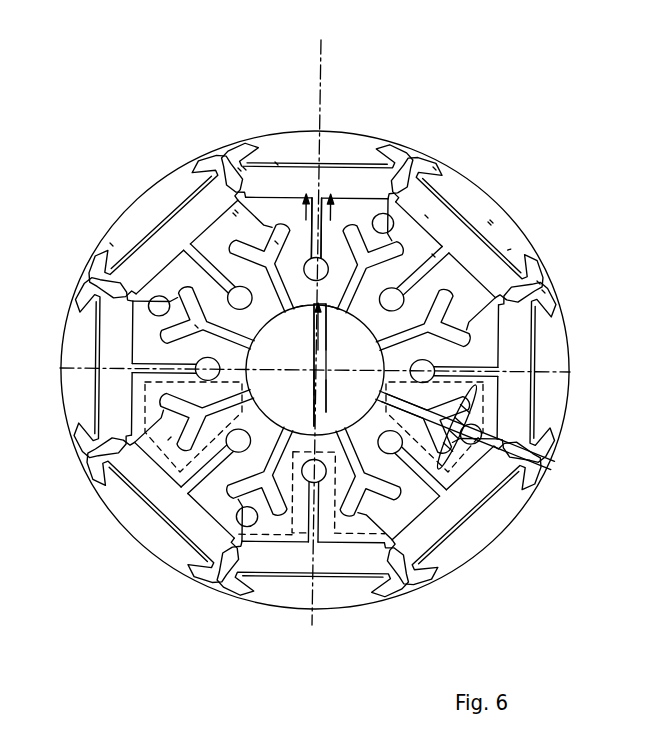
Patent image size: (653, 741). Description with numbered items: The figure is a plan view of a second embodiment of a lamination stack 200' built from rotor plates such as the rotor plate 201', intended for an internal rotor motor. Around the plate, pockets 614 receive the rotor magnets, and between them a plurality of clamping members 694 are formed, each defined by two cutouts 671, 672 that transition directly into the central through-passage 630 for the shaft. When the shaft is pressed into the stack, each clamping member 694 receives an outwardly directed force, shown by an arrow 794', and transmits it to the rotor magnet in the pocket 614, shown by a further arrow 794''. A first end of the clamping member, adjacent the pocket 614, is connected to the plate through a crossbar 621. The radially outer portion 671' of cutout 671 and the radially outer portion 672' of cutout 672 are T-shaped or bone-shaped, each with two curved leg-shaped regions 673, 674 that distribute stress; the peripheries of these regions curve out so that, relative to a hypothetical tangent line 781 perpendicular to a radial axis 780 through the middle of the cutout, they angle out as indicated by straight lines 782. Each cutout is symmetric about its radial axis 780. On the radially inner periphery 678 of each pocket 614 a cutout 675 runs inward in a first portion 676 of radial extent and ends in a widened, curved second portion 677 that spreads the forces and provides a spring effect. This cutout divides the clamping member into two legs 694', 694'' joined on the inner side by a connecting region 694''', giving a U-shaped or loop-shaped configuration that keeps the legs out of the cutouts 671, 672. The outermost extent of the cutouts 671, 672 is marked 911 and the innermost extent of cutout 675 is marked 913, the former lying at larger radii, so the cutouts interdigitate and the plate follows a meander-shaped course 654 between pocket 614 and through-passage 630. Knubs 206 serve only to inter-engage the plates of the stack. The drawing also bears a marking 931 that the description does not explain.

The lamination stack 200' is at (314, 317).
The center axis 931 is at (326, 46).
The crossbar 621 is at (282, 208).
The radially inner periphery 678 is at (243, 167).
The pocket 614 is at (275, 162).
The cutout 675 is at (322, 195).
The arrow 794'' is at (303, 127).
The knubs 206 is at (392, 216).
The radially outer portion of cutout 672' is at (463, 167).
The maximum radial extent of cutouts toward the outside 911 is at (488, 222).
The leg-shaped region 674 is at (233, 213).
The rotor plate 201' is at (527, 193).
The radially outer portion of cutout 671' is at (158, 187).
The leg-shaped region 673 is at (275, 241).
The first portion 676 is at (110, 243).
The leg 694'' is at (524, 239).
The maximum radial extent of cutout toward the inside 913 is at (542, 290).
The leg 694' is at (110, 323).
The cutout 671 is at (283, 322).
The cutout 672 is at (347, 321).
The second portion 677 is at (314, 345).
The tangent line 781 is at (478, 389).
The arrow 794' is at (292, 383).
The clamping member 694 is at (343, 350).
The straight lines 782 is at (495, 381).
The connecting region 694''' is at (291, 411).
The through-passage 630 is at (325, 403).
The radial axis 780 is at (553, 465).
The meander-shaped course 654 is at (168, 440).